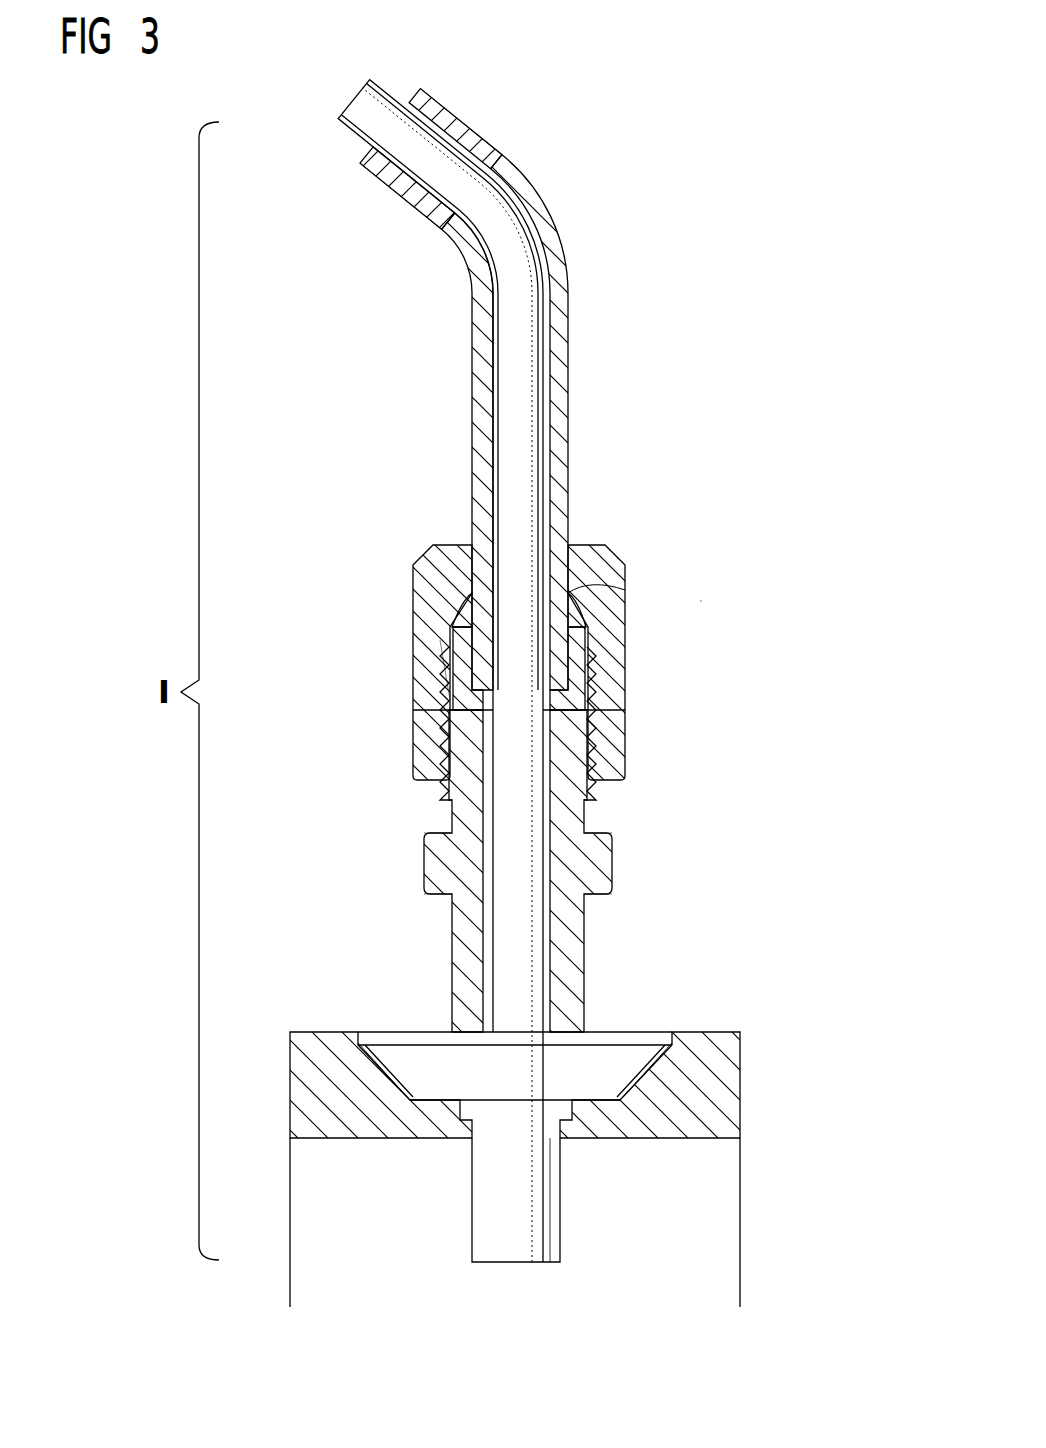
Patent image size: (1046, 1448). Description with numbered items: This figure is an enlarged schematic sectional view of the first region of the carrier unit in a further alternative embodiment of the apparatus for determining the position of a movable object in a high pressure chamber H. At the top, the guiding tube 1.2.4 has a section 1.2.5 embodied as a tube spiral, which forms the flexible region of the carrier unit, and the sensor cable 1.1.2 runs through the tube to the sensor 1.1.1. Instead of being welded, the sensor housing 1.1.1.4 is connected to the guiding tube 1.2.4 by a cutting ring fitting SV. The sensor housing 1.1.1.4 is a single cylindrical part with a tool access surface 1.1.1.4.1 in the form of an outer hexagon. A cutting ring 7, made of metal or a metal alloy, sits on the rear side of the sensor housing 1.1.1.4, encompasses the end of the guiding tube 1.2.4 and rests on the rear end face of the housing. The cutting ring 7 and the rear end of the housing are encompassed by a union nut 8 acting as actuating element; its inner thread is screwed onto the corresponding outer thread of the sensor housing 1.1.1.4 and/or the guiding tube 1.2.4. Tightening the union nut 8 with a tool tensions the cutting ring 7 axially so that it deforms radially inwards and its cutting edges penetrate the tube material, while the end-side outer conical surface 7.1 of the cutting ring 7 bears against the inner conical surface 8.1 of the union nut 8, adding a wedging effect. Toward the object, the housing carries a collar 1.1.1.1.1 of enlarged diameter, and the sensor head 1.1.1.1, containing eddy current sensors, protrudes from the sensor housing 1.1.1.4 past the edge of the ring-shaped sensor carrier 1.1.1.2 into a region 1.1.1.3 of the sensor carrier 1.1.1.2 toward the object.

The section 1.2.5 is at (458, 138).
The sensor cable 1.1.2 is at (357, 138).
The guiding tube 1.2.4 is at (565, 358).
The union nut 8 is at (425, 592).
The inner conical surface 8.1 is at (598, 594).
The high pressure chamber H is at (720, 608).
The cutting ring fitting SV is at (402, 647).
The outer conical surface 7.1 is at (598, 634).
The cutting ring 7 is at (452, 697).
The tool access surface 1.1.1.4.1 is at (604, 862).
The sensor 1.1.1 is at (406, 926).
The sensor housing 1.1.1.4 is at (573, 958).
The collar 1.1.1.1.1 is at (410, 1050).
The sensor carrier 1.1.1.2 is at (725, 1075).
The sensor head 1.1.1.1 is at (534, 1227).
The region 1.1.1.3 is at (723, 1273).